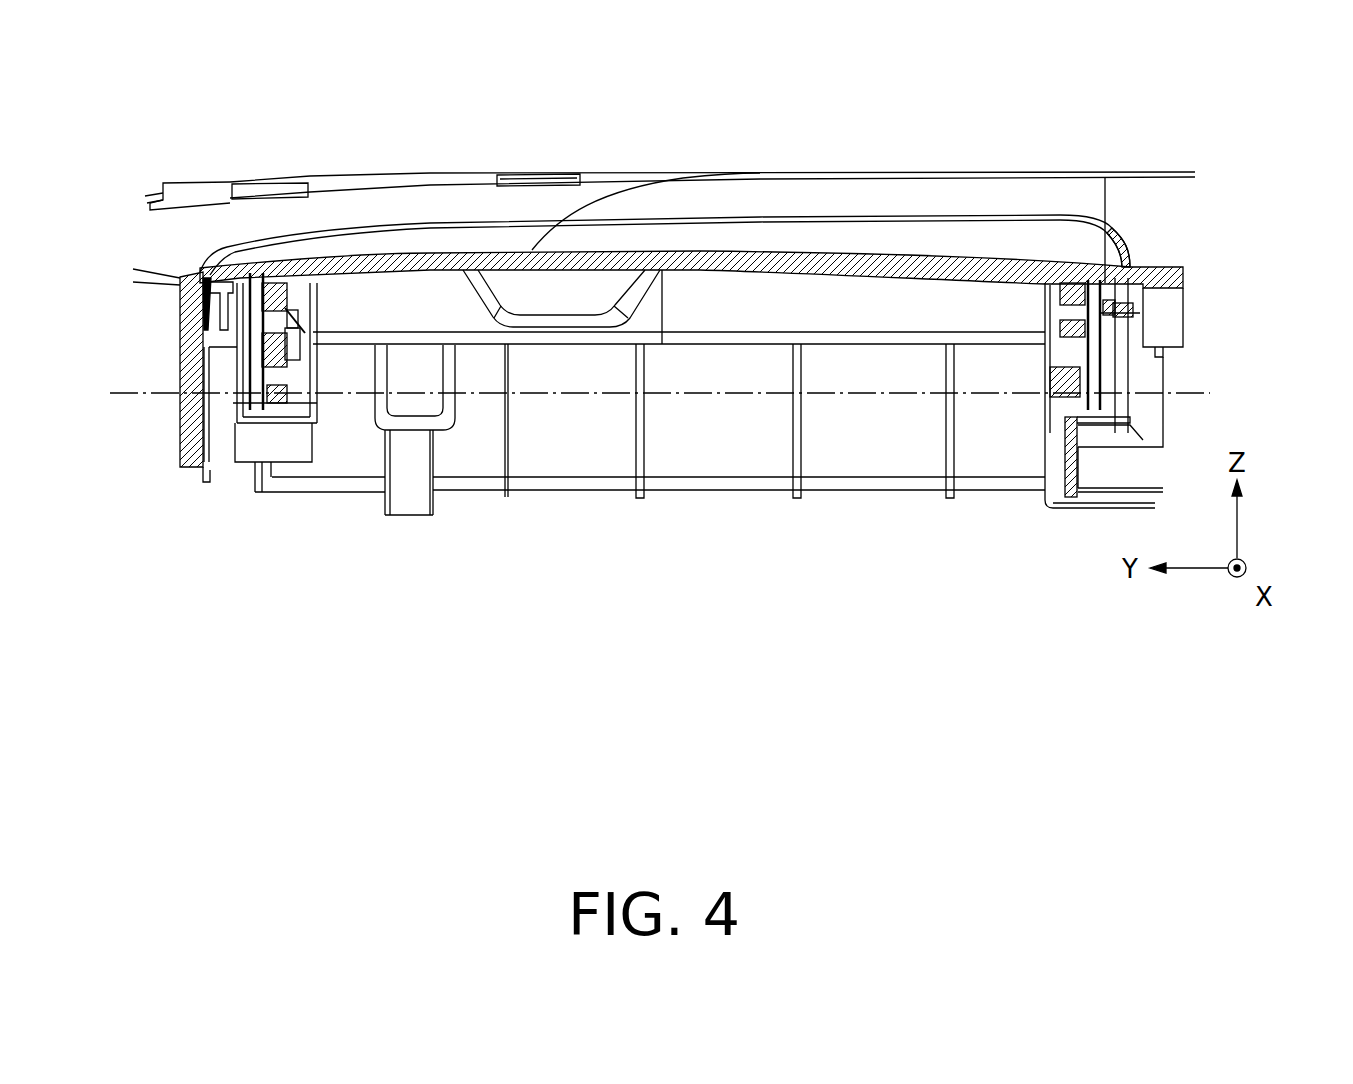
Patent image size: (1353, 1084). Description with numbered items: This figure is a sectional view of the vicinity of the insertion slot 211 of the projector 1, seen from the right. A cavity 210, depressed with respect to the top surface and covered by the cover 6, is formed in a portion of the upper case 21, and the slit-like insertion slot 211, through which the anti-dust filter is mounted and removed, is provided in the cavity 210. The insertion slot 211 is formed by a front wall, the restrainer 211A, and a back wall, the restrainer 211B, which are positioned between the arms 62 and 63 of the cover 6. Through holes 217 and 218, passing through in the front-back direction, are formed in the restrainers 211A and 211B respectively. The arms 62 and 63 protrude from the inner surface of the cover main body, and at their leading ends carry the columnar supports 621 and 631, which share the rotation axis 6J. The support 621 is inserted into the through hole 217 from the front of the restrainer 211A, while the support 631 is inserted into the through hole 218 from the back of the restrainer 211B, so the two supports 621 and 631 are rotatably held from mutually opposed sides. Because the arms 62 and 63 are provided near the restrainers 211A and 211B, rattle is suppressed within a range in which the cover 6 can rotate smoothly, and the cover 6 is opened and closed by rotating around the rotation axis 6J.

The projector 1 is at (1025, 147).
The cover 6 is at (852, 257).
The upper case 21 is at (1167, 277).
The arm 62 is at (238, 347).
The arm 63 is at (1085, 335).
The cavity 210 is at (868, 317).
The insertion slot 211 is at (725, 345).
The restrainer 211A is at (248, 352).
The restrainer 211B is at (1053, 355).
The through hole 217 is at (336, 338).
The through hole 218 is at (1050, 387).
The support 621 is at (288, 407).
The support 631 is at (1045, 405).
The rotation axis 6J is at (545, 397).